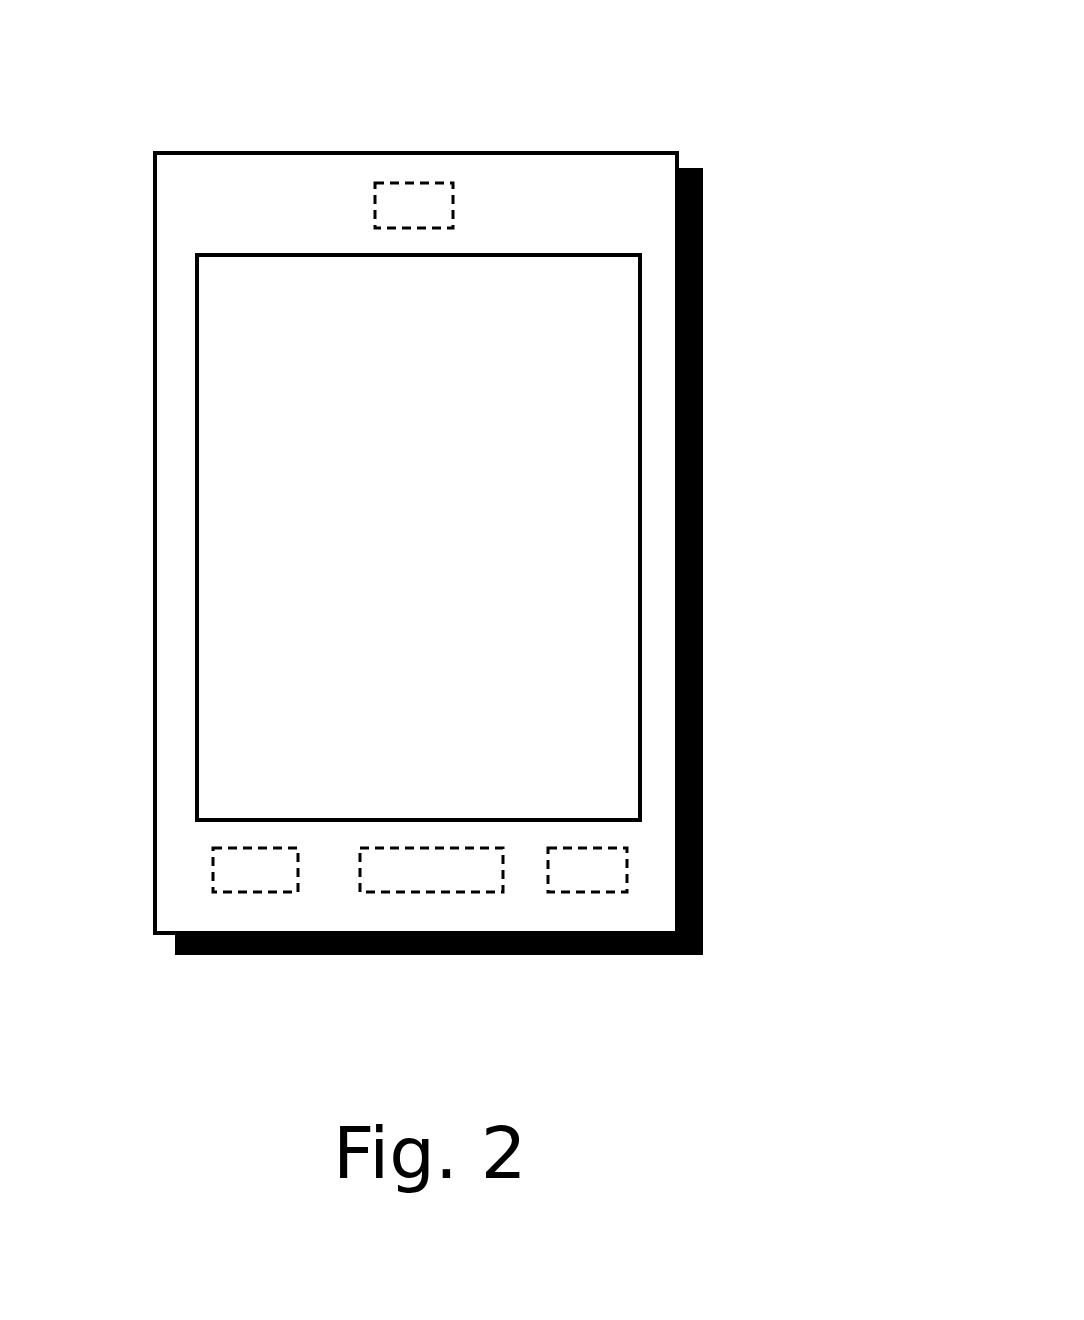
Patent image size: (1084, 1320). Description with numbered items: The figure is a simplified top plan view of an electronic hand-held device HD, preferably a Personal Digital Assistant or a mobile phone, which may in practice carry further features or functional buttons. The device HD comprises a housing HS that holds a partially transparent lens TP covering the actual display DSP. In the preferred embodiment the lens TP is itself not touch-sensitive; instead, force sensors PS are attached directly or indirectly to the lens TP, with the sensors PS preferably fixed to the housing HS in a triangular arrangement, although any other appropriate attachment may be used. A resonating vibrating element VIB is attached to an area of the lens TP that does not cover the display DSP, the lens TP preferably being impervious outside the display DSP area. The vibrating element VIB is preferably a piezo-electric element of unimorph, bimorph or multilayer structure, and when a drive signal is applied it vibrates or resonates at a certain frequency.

The electronic hand-held device HD is at (735, 391).
The housing HS is at (703, 541).
The lens TP is at (640, 182).
The display DSP is at (370, 514).
The force sensors PS is at (437, 183).
The resonating vibrating element VIB is at (392, 892).